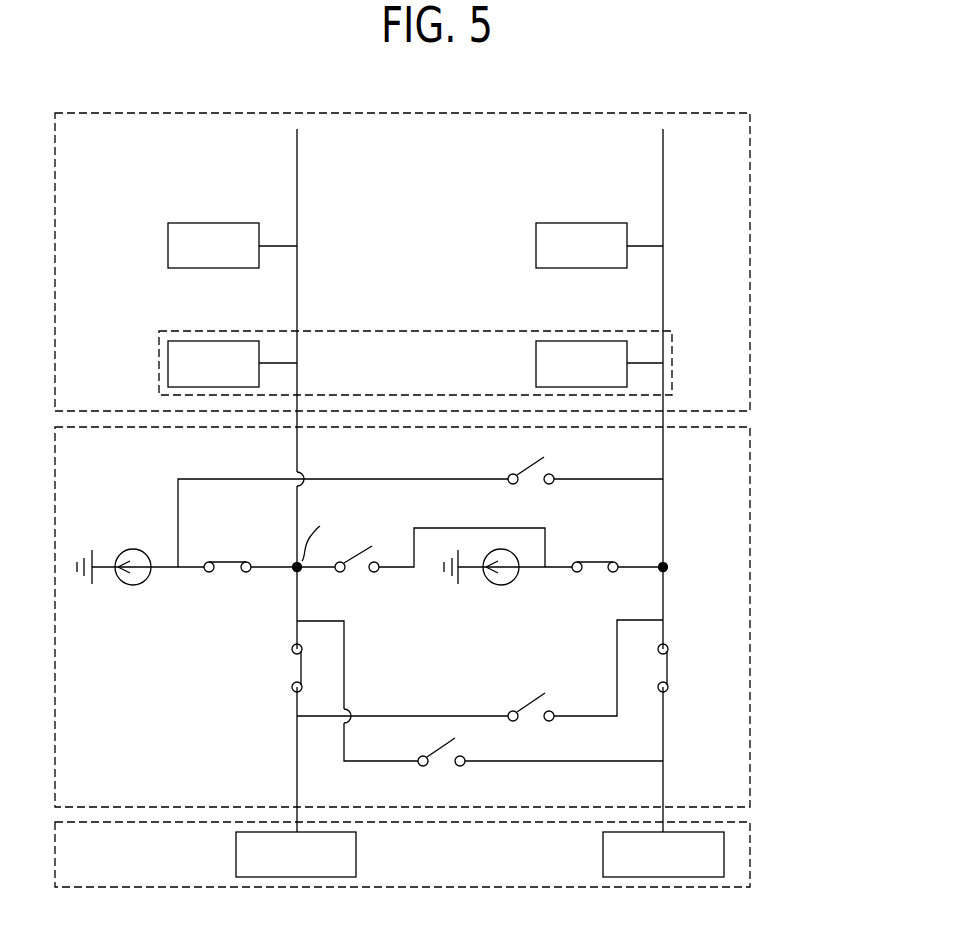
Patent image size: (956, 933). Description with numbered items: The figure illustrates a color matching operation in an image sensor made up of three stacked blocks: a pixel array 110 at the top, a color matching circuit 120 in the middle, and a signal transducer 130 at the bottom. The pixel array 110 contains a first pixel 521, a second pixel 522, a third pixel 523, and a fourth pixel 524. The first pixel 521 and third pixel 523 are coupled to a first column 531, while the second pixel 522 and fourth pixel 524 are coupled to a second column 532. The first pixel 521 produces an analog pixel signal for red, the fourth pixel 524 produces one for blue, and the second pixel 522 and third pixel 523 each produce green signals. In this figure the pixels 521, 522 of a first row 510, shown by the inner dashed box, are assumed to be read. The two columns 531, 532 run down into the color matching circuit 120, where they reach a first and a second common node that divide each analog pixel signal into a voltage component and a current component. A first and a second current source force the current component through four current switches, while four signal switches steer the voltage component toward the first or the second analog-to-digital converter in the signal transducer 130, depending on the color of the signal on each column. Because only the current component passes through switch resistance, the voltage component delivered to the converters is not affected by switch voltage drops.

The pixel array 110 is at (750, 262).
The color matching circuit 120 is at (750, 635).
The signal transducer 130 is at (750, 848).
The first row 510 is at (672, 347).
The first pixel 521 is at (237, 341).
The second pixel 522 is at (605, 341).
The third pixel 523 is at (237, 223).
The fourth pixel 524 is at (605, 223).
The first column 531 is at (297, 153).
The second column 532 is at (663, 155).